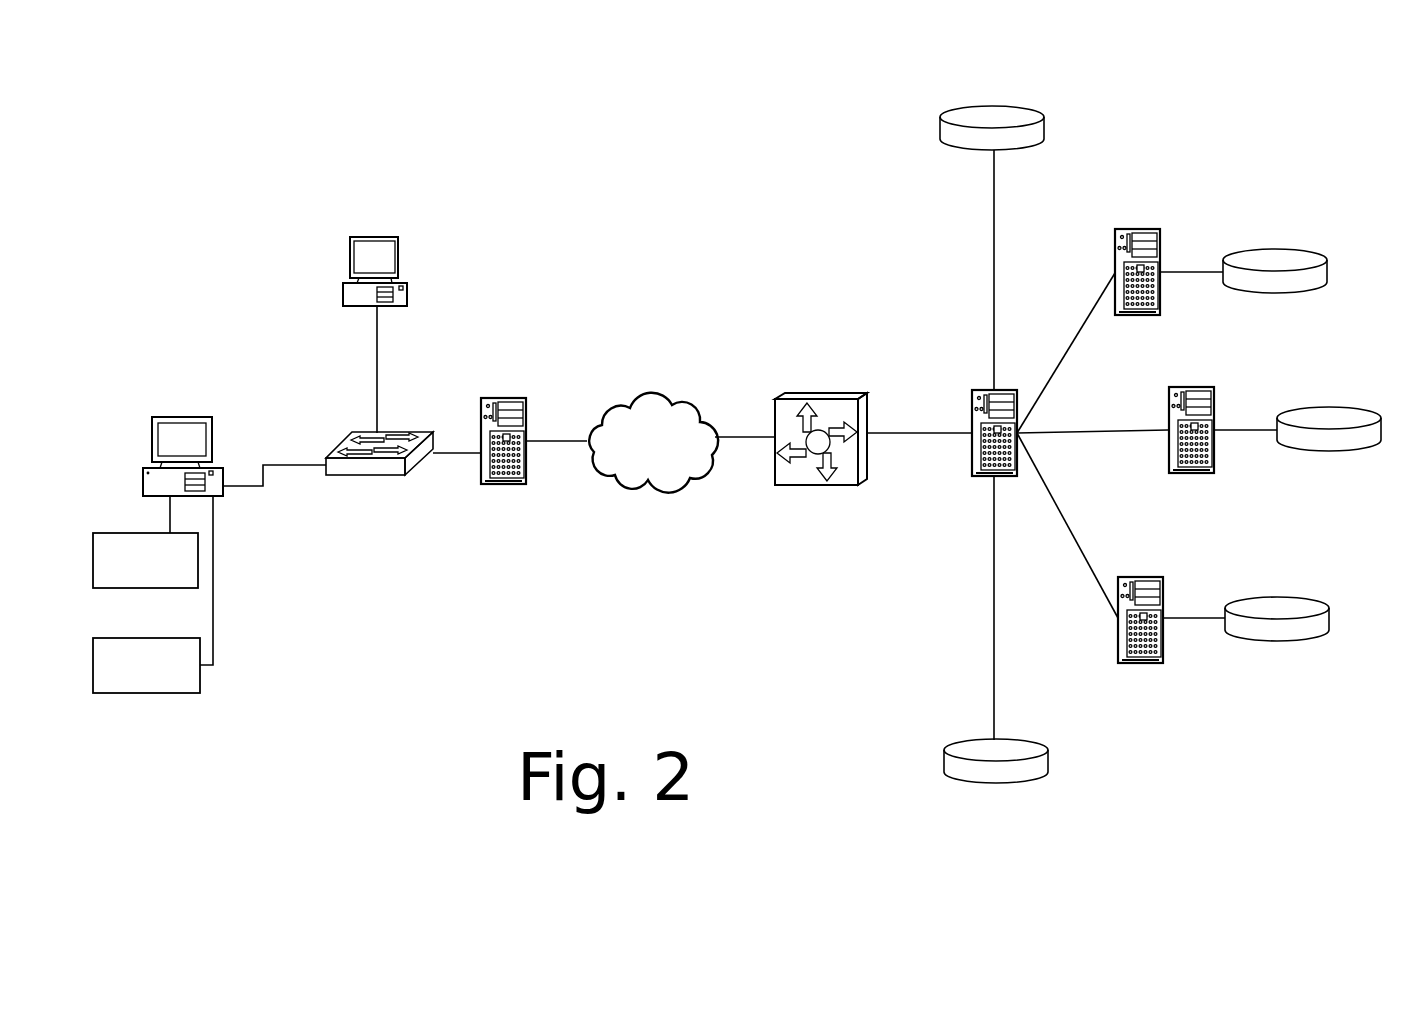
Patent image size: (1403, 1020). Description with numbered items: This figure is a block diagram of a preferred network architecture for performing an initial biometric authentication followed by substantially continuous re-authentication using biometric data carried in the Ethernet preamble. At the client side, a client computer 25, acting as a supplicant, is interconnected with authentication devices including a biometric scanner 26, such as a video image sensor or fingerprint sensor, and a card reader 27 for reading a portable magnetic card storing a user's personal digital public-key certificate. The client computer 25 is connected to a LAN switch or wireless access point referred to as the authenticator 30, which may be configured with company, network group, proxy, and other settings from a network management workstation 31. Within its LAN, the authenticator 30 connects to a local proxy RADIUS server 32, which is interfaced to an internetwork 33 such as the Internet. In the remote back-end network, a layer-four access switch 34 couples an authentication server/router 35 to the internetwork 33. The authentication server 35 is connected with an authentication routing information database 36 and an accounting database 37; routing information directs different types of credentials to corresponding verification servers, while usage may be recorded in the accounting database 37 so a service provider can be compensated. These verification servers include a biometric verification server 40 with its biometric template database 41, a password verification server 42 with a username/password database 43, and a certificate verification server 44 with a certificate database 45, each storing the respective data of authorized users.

The client computer 25 is at (194, 417).
The biometric scanner 26 is at (127, 588).
The card reader 27 is at (162, 695).
The authenticator 30 is at (358, 475).
The network management workstation 31 is at (343, 288).
The local proxy RADIUS server 32 is at (512, 397).
The internetwork 33 is at (627, 473).
The layer-4 access switch 34 is at (805, 392).
The authentication server/router 35 is at (970, 453).
The authentication routing information database 36 is at (958, 150).
The accounting database 37 is at (970, 738).
The biometric verification server 40 is at (1163, 640).
The biometric template database 41 is at (1295, 597).
The password verification server 42 is at (1215, 448).
The username/password database 43 is at (1338, 407).
The certificate verification server 44 is at (1160, 240).
The certificate database 45 is at (1292, 250).